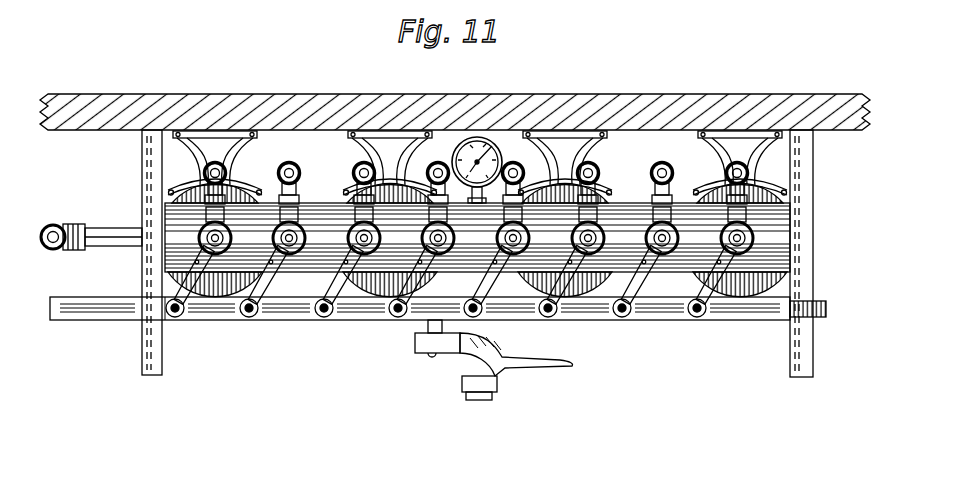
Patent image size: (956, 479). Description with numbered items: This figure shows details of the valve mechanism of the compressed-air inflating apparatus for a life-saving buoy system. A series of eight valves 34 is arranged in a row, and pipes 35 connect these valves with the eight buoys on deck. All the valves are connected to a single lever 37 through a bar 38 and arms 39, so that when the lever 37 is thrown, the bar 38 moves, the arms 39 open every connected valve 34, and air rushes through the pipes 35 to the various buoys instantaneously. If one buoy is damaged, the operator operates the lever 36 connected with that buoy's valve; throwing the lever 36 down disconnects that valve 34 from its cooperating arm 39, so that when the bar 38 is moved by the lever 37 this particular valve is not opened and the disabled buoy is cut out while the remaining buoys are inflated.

The valve 34 is at (276, 232).
The pipe 35 is at (299, 179).
The lever 36 is at (598, 322).
The lever 37 is at (494, 362).
The bar 38 is at (372, 320).
The arm 39 is at (320, 292).